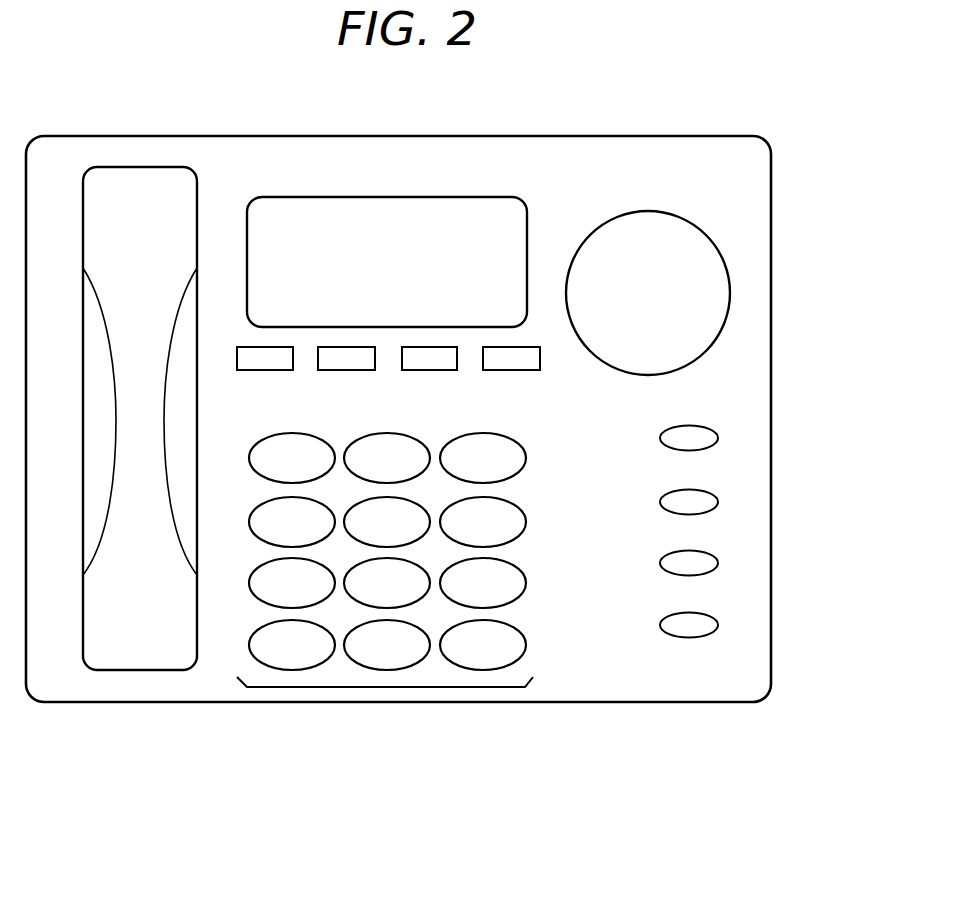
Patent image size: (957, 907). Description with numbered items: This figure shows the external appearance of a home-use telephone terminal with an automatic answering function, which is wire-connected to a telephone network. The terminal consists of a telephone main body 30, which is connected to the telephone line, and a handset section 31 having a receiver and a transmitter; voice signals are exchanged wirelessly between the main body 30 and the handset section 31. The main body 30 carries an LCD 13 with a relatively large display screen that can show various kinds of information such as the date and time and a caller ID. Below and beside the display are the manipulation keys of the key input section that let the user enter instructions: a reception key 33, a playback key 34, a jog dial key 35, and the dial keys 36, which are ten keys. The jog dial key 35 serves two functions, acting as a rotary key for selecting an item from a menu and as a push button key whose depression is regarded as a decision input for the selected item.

The LCD 13 is at (320, 197).
The telephone main body 30 is at (627, 702).
The handset section 31 is at (148, 672).
The reception key 33 is at (433, 347).
The playback key 34 is at (503, 347).
The jog dial key 35 is at (730, 298).
The dial keys 36 is at (393, 688).